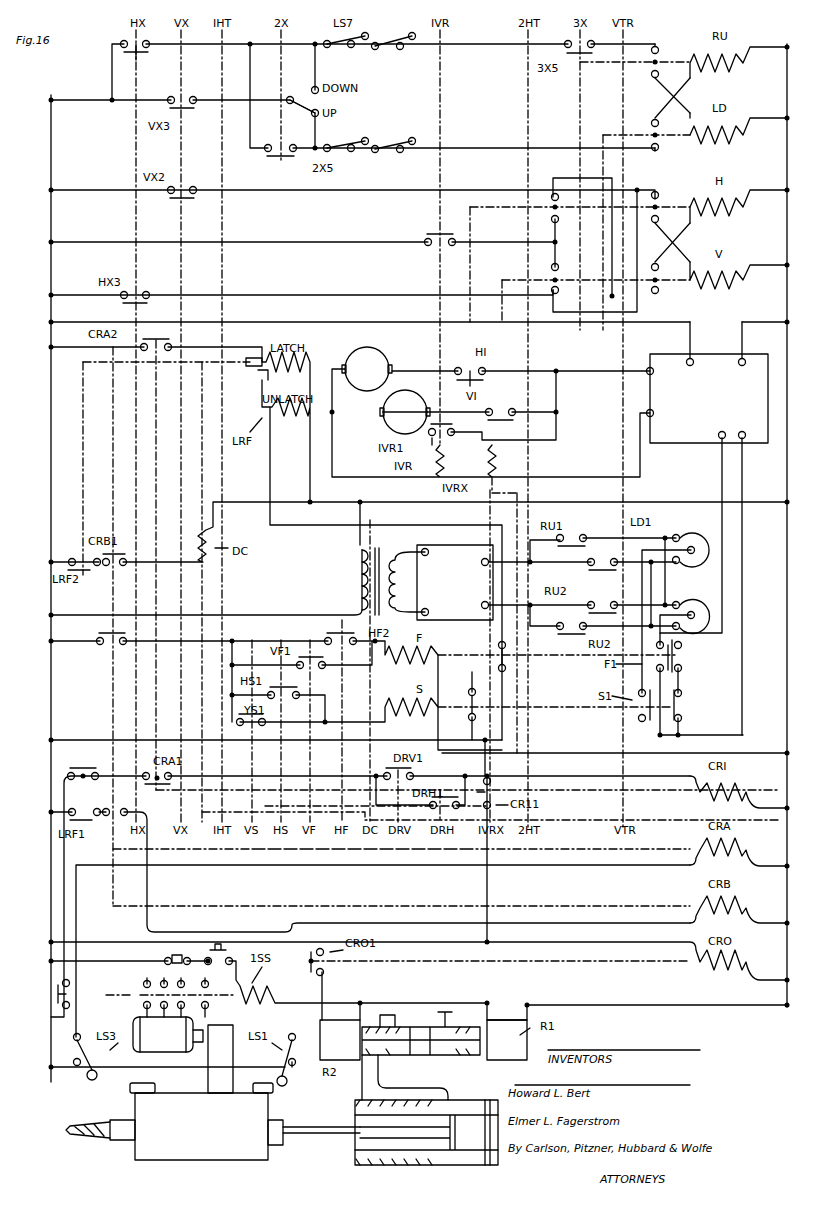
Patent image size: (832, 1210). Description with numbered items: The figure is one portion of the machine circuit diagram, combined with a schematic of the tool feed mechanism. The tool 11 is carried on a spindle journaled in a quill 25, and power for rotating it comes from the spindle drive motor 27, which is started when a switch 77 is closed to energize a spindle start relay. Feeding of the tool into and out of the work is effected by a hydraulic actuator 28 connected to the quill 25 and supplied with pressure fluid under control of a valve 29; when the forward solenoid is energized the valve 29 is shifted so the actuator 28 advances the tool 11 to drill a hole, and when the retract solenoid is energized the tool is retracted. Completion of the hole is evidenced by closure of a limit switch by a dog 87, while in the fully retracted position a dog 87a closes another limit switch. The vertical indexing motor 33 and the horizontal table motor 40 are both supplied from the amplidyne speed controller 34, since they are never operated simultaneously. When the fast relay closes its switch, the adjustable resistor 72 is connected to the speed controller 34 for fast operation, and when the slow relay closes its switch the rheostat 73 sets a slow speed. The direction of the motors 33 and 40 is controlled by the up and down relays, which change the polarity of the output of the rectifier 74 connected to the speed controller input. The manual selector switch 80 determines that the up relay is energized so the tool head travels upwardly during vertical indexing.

The manual selector switch 80 is at (358, 98).
The reversible motor 40 is at (369, 364).
The reversible electric motor 33 is at (405, 406).
The speed controller 34 is at (692, 438).
The rectifier 74 is at (420, 548).
The rheostat 73 is at (692, 538).
The adjustable resistor 72 is at (700, 636).
The switch 77 is at (240, 948).
The valve 29 is at (440, 1010).
The motor 27 is at (133, 1027).
The quill 25 is at (181, 1156).
The hydraulic actuator 28 is at (404, 1168).
The dog 87 is at (130, 1088).
The dog 87a is at (274, 1090).
The tool 11 is at (92, 1120).